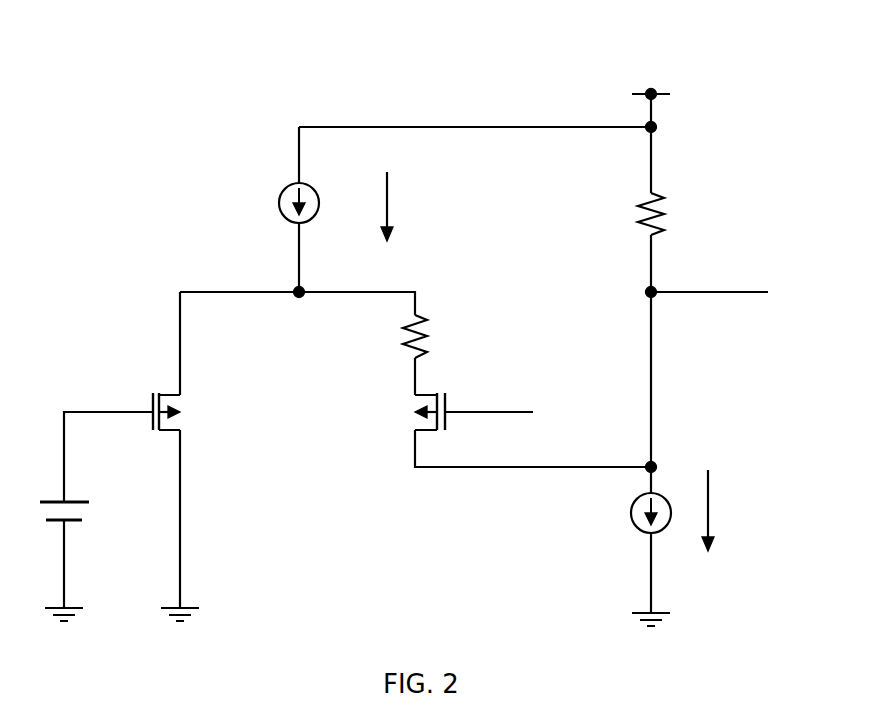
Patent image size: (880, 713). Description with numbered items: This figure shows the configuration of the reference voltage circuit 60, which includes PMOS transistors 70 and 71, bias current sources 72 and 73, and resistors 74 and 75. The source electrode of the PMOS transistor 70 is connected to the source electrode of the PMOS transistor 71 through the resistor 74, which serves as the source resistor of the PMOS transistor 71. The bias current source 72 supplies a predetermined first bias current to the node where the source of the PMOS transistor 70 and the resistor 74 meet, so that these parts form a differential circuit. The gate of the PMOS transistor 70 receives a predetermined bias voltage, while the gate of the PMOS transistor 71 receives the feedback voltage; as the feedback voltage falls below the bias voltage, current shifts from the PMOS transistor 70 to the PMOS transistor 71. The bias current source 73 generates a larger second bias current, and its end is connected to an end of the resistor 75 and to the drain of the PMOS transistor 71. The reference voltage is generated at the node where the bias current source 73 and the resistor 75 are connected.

The reference voltage circuit 60 is at (502, 67).
The PMOS transistor 70 is at (182, 404).
The PMOS transistor 71 is at (430, 389).
The bias current source 72 is at (311, 182).
The bias current source 73 is at (632, 525).
The resistor 74 is at (419, 322).
The resistor 75 is at (654, 200).